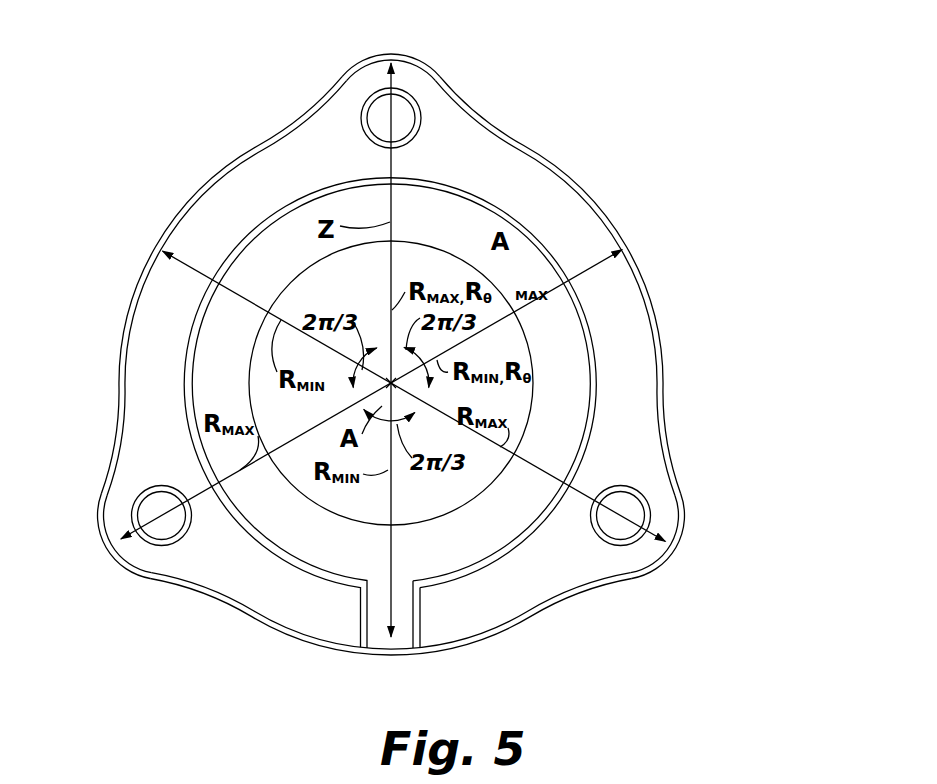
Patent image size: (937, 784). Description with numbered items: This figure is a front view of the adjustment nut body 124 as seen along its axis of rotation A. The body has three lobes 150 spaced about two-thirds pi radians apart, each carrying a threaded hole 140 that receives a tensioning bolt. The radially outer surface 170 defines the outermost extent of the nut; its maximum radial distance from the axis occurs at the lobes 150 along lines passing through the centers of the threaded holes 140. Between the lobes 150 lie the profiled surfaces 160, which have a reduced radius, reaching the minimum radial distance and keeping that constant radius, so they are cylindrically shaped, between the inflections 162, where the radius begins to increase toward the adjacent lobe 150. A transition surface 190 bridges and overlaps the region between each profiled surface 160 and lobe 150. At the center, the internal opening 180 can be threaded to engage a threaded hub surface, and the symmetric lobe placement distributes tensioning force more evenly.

The adjustment nut body 124 is at (531, 167).
The threaded holes 140 is at (372, 118).
The lobes 150 is at (424, 347).
The profiled surfaces 160 is at (208, 177).
The inflections 162 is at (522, 146).
The radially outer surface 170 is at (139, 279).
The internal opening 180 is at (409, 522).
The transition surface 190 is at (338, 84).